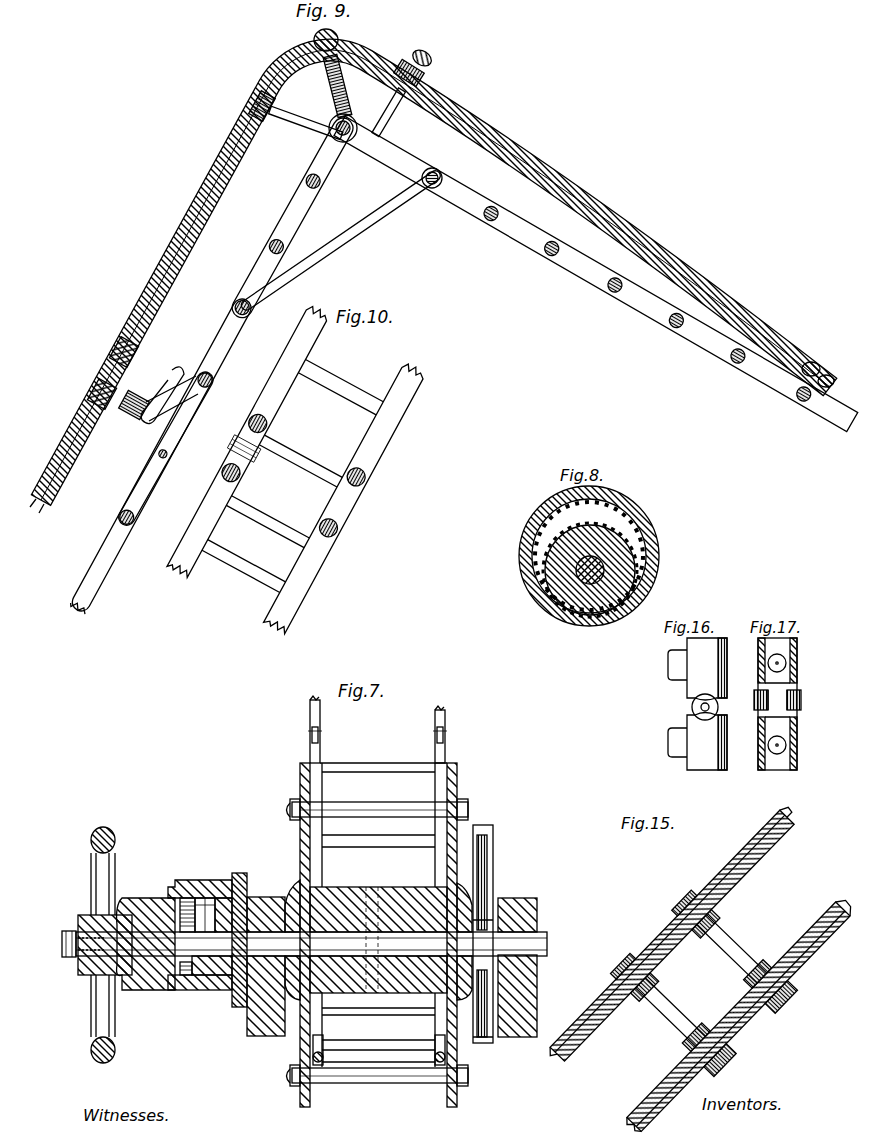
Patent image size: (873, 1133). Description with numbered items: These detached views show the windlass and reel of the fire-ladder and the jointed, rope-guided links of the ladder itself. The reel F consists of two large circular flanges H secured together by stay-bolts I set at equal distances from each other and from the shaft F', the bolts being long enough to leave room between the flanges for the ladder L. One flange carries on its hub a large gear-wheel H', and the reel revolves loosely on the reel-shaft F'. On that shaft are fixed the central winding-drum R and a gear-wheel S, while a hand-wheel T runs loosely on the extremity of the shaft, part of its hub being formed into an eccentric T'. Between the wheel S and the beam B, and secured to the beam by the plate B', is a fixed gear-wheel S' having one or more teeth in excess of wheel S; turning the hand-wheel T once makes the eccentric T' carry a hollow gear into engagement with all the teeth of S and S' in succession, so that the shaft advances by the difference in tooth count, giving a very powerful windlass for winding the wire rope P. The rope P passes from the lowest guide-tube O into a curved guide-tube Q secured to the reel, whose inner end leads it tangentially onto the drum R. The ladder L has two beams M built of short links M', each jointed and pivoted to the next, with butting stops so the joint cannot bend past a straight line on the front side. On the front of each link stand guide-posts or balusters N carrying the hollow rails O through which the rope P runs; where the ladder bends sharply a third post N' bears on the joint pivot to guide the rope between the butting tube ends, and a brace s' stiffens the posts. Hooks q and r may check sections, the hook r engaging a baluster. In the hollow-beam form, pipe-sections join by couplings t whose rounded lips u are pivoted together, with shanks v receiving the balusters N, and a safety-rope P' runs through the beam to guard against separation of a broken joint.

In FIG. 9, the rope clamp pin N' is at (328, 33).
In FIG. 9, the wire rope P is at (435, 289).
In FIG. 15, the wire rope P is at (670, 931).
In FIG. 9, the guide-posts or balusters N is at (260, 233).
In FIG. 10, the guide-posts or balusters N is at (293, 494).
In FIG. 15, the guide-posts or balusters N is at (690, 970).
In FIG. 9, the guide-tubes or hollow rails O is at (433, 272).
In FIG. 15, the guide-tubes or hollow rails O is at (672, 935).
In FIG. 9, the links M' is at (293, 217).
In FIG. 9, the brace s' is at (340, 240).
In FIG. 9, the ladder L is at (643, 302).
In FIG. 10, the ladder L is at (292, 476).
In FIG. 7, the ladder L is at (383, 912).
In FIG. 9, the beams M is at (463, 365).
In FIG. 10, the beams M is at (295, 468).
In FIG. 15, the beams M is at (736, 1017).
In FIG. 9, the hook r is at (169, 383).
In FIG. 9, the hook q is at (166, 448).
In FIG. 8, the rounded lip u is at (589, 565).
In FIG. 16, the rounded lip u is at (711, 707).
In FIG. 17, the rounded lip u is at (783, 700).
In FIG. 7, the rounded lip u is at (200, 926).
In FIG. 16, the coupling t is at (707, 704).
In FIG. 17, the coupling t is at (783, 704).
In FIG. 15, the coupling t is at (751, 1029).
In FIG. 16, the shank v is at (677, 703).
In FIG. 7, the hand-wheel T is at (103, 935).
In FIG. 7, the eccentric T' is at (126, 945).
In FIG. 7, the gear-wheel S is at (198, 934).
In FIG. 7, the fixed gear-wheel S' is at (216, 933).
In FIG. 7, the plate B' is at (247, 940).
In FIG. 7, the beam B is at (392, 966).
In FIG. 7, the reel F is at (375, 935).
In FIG. 7, the reel-shaft F' is at (313, 944).
In FIG. 7, the stay-bolts I is at (378, 942).
In FIG. 7, the flanges H is at (388, 904).
In FIG. 7, the gear-wheel H' is at (490, 934).
In FIG. 7, the winding-drum R is at (378, 933).
In FIG. 7, the curved guide-tube Q is at (379, 1040).
In FIG. 15, the safety-rope P' is at (846, 905).